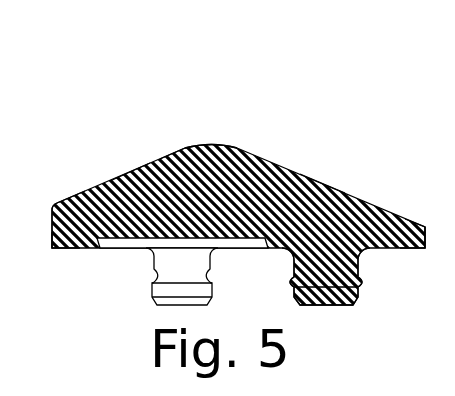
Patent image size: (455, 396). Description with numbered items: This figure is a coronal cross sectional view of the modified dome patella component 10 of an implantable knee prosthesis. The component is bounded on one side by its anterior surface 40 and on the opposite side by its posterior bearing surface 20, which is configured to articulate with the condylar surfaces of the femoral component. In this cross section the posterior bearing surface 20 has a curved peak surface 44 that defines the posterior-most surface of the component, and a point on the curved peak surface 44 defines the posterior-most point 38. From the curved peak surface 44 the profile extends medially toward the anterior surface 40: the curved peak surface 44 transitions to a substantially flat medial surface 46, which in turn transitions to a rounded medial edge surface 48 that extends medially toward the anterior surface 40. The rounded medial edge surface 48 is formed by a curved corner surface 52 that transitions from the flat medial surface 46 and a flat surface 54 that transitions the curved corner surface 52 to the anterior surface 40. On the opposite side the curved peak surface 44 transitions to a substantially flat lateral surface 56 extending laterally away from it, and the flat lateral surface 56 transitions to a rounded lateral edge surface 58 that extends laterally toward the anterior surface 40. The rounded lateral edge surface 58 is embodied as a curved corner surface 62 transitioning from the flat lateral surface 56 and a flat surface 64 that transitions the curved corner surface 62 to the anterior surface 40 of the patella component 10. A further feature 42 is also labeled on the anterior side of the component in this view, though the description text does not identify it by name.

The modified dome patella component 10 is at (294, 104).
The posterior bearing surface 20 is at (351, 196).
The posterior-most point 38 is at (212, 146).
The anterior surface 40 is at (240, 249).
The stud 42 is at (333, 306).
The curved peak surface 44 is at (181, 147).
The flat medial surface 46 is at (130, 171).
The rounded medial edge surface 48 is at (67, 198).
The curved corner surface 52 is at (53, 206).
The flat surface 54 is at (53, 250).
The flat lateral surface 56 is at (322, 183).
The rounded lateral edge surface 58 is at (428, 233).
The curved corner surface 62 is at (423, 228).
The flat surface 64 is at (428, 249).